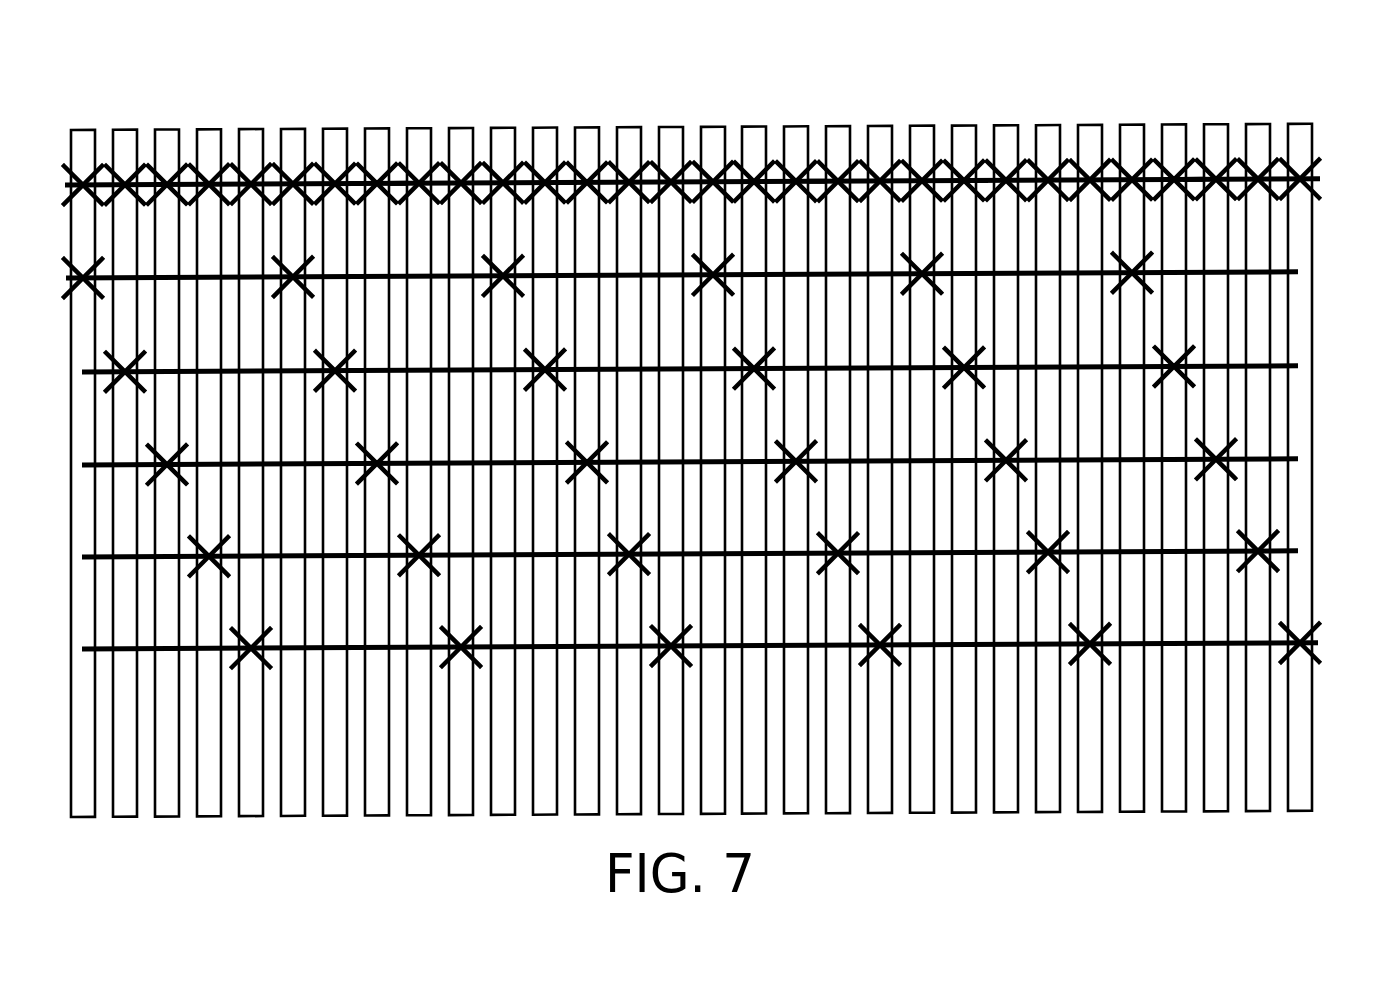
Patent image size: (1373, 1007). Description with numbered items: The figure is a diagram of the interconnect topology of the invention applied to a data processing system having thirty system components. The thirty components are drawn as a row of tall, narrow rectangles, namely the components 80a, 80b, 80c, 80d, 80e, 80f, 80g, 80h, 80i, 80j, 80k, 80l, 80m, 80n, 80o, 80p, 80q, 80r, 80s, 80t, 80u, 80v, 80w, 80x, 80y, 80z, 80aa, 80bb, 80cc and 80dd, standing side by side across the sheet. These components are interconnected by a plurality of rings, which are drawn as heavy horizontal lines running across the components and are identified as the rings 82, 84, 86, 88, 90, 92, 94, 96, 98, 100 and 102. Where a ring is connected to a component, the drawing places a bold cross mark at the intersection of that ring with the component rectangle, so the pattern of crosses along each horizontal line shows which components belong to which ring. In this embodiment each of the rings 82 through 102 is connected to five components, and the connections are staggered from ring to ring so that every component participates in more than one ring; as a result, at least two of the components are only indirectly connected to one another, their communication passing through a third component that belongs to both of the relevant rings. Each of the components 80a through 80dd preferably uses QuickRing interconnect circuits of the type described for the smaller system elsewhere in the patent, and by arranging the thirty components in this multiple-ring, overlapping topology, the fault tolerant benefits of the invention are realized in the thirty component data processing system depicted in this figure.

The component 80a is at (83, 130).
The component 80b is at (127, 130).
The component 80c is at (167, 130).
The component 80d is at (211, 130).
The component 80e is at (251, 130).
The component 80f is at (295, 130).
The component 80g is at (335, 130).
The component 80h is at (379, 130).
The component 80i is at (419, 130).
The component 80j is at (465, 130).
The component 80k is at (503, 130).
The component 80l is at (547, 130).
The component 80m is at (587, 130).
The component 80n is at (631, 130).
The component 80o is at (671, 130).
The component 80p is at (715, 130).
The component 80q is at (754, 130).
The component 80r is at (798, 130).
The component 80s is at (838, 130).
The component 80t is at (881, 130).
The component 80u is at (922, 130).
The component 80v is at (965, 130).
The component 80w is at (1006, 130).
The component 80x is at (1049, 130).
The component 80y is at (1090, 130).
The component 80z is at (1133, 130).
The component 80aa is at (1174, 130).
The component 80bb is at (1207, 130).
The component 80cc is at (1262, 130).
The component 80dd is at (1304, 130).
The ring 82 is at (150, 210).
The ring 84 is at (398, 180).
The ring 86 is at (567, 180).
The ring 88 is at (817, 180).
The ring 90 is at (978, 180).
The ring 92 is at (1193, 178).
The ring 94 is at (130, 284).
The ring 96 is at (168, 368).
The ring 98 is at (123, 467).
The ring 100 is at (125, 558).
The ring 102 is at (125, 650).